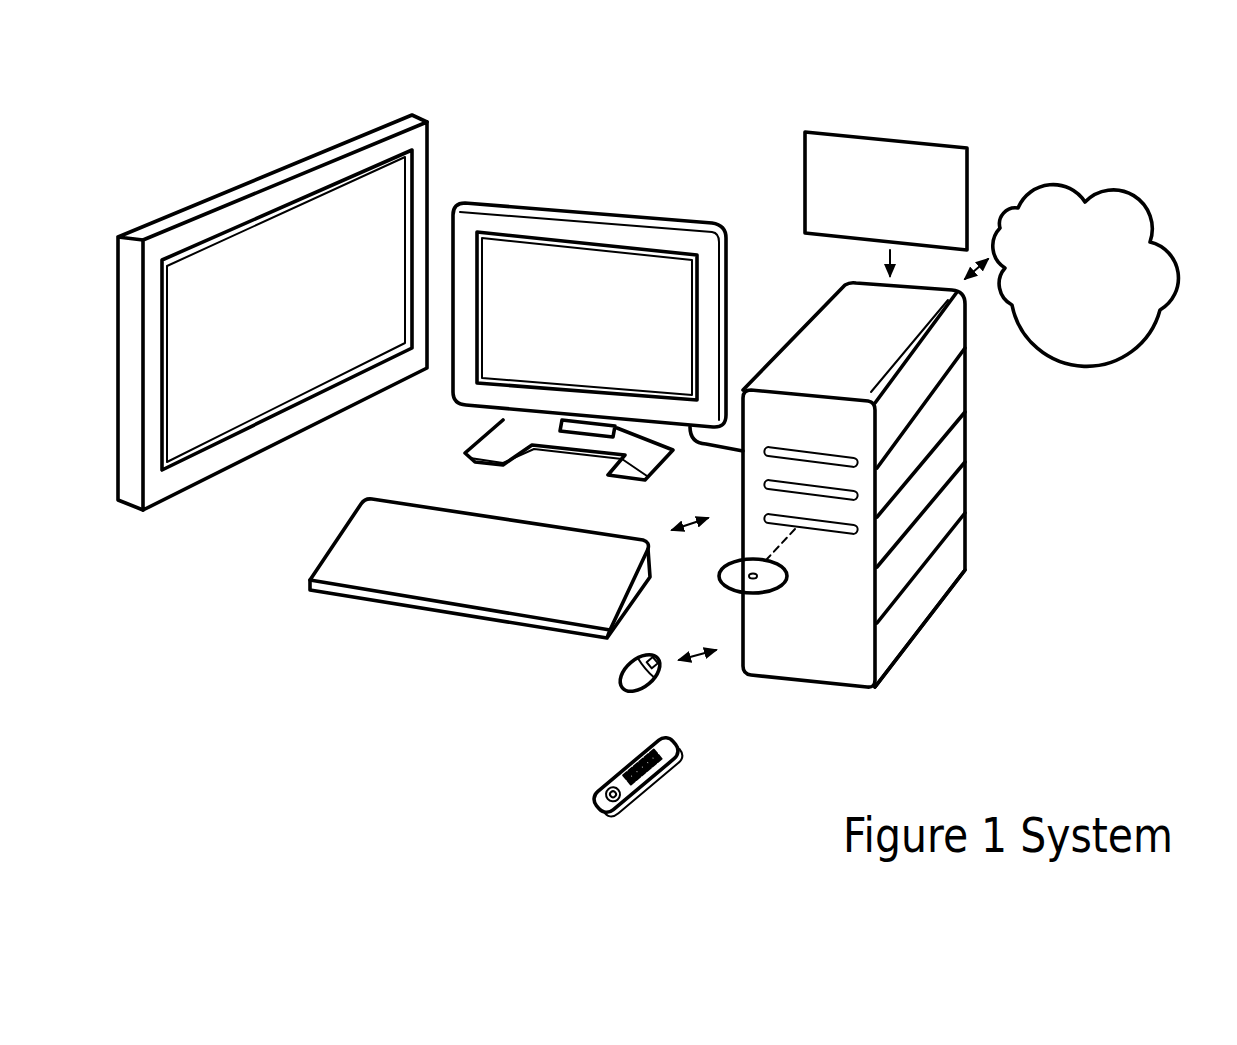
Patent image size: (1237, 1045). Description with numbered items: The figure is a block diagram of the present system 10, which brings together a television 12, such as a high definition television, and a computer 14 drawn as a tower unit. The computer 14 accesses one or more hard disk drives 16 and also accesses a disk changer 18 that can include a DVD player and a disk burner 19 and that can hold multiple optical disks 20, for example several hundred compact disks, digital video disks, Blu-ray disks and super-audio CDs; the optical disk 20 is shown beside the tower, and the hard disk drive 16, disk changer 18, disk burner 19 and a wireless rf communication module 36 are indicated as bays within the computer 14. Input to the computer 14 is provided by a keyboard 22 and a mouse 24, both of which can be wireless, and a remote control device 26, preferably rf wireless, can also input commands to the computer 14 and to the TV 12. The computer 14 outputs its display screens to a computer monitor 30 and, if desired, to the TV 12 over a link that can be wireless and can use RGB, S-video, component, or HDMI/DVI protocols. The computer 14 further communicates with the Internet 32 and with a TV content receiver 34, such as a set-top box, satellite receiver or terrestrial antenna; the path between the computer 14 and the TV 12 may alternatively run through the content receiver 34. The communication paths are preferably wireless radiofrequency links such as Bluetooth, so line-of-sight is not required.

The system 10 is at (612, 132).
The television 12 is at (177, 490).
The computer 14 is at (948, 560).
The hard disk drive 16 is at (945, 513).
The disk changer 18 is at (942, 413).
The disk burner 19 is at (945, 463).
The optical disks 20 is at (724, 575).
The keyboard 22 is at (457, 607).
The mouse 24 is at (628, 668).
The remote control device 26 is at (597, 804).
The computer monitor 30 is at (528, 204).
The Internet 32 is at (1035, 205).
The TV content receiver 34 is at (805, 177).
The wireless rf communication module 36 is at (948, 347).